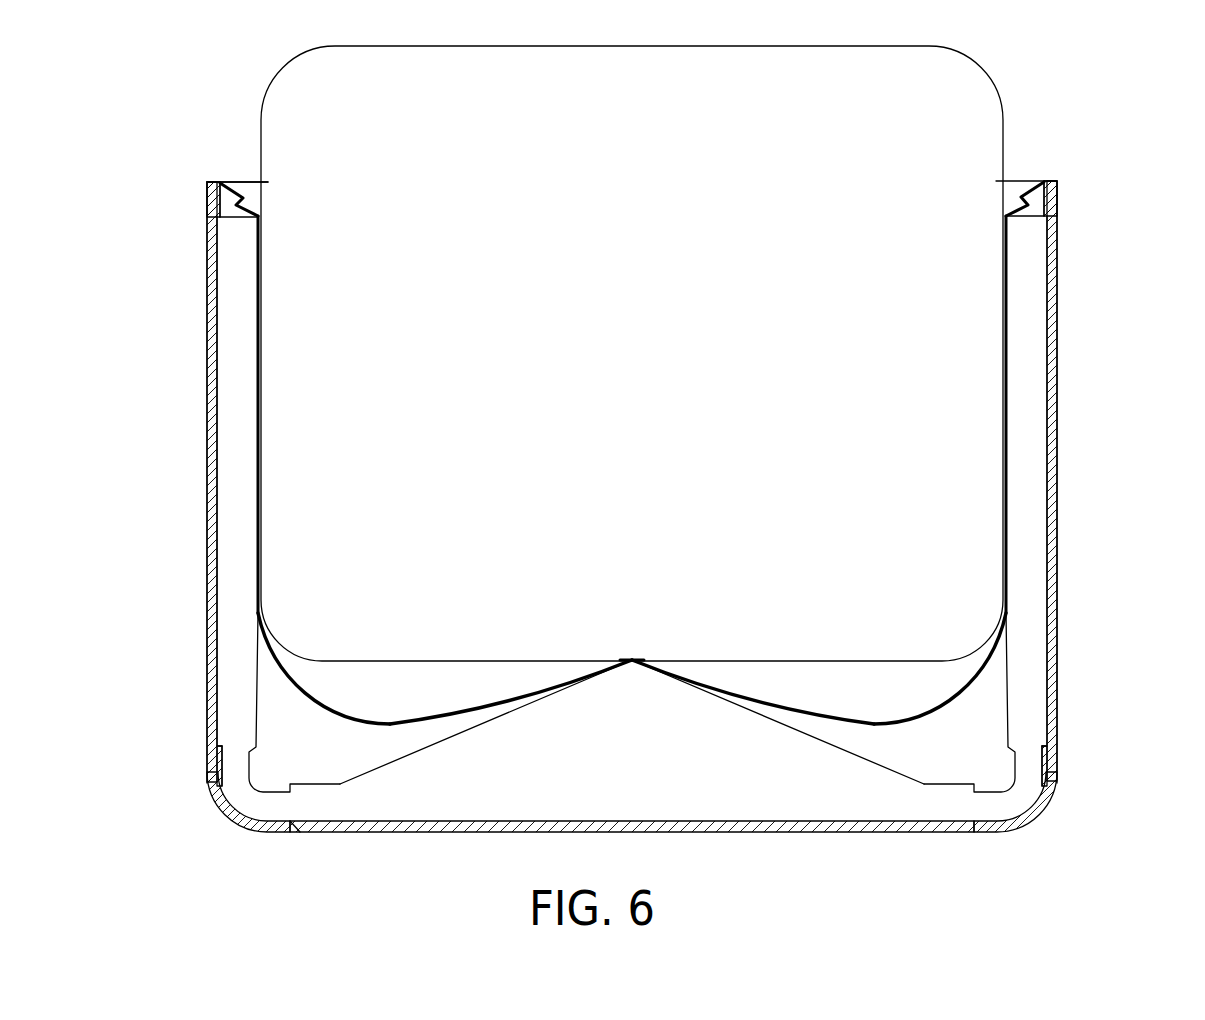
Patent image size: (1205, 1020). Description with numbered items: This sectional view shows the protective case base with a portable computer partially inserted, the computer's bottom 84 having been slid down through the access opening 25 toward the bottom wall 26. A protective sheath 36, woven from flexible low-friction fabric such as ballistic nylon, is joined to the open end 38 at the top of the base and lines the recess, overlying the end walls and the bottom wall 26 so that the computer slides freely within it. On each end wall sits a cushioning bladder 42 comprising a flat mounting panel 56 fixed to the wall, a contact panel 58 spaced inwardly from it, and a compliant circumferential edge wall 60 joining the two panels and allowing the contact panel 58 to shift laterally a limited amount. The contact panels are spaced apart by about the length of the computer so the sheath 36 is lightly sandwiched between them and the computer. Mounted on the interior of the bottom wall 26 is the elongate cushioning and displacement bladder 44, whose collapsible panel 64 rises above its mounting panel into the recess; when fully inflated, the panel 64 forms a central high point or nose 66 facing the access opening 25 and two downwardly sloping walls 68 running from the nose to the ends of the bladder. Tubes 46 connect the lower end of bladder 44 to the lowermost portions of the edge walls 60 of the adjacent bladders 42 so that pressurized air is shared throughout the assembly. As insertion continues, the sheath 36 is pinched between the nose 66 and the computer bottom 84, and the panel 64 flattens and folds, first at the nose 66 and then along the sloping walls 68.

The access opening 25 is at (1028, 181).
The bottom wall 26 is at (868, 829).
The protective sheath 36 is at (302, 692).
The open end 38 is at (208, 181).
The cushioning bladder 42 is at (214, 762).
The cushioning and displacement bladder 44 is at (290, 830).
The tubes 46 is at (223, 815).
The mounting panel 56 is at (208, 458).
The contact panel 58 is at (258, 338).
The compliant circumferential edge wall 60 is at (232, 215).
The collapsible panel 64 is at (395, 762).
The high point or nose 66 is at (630, 663).
The downwardly sloping walls 68 is at (493, 720).
The bottom of the computer 84 is at (893, 662).